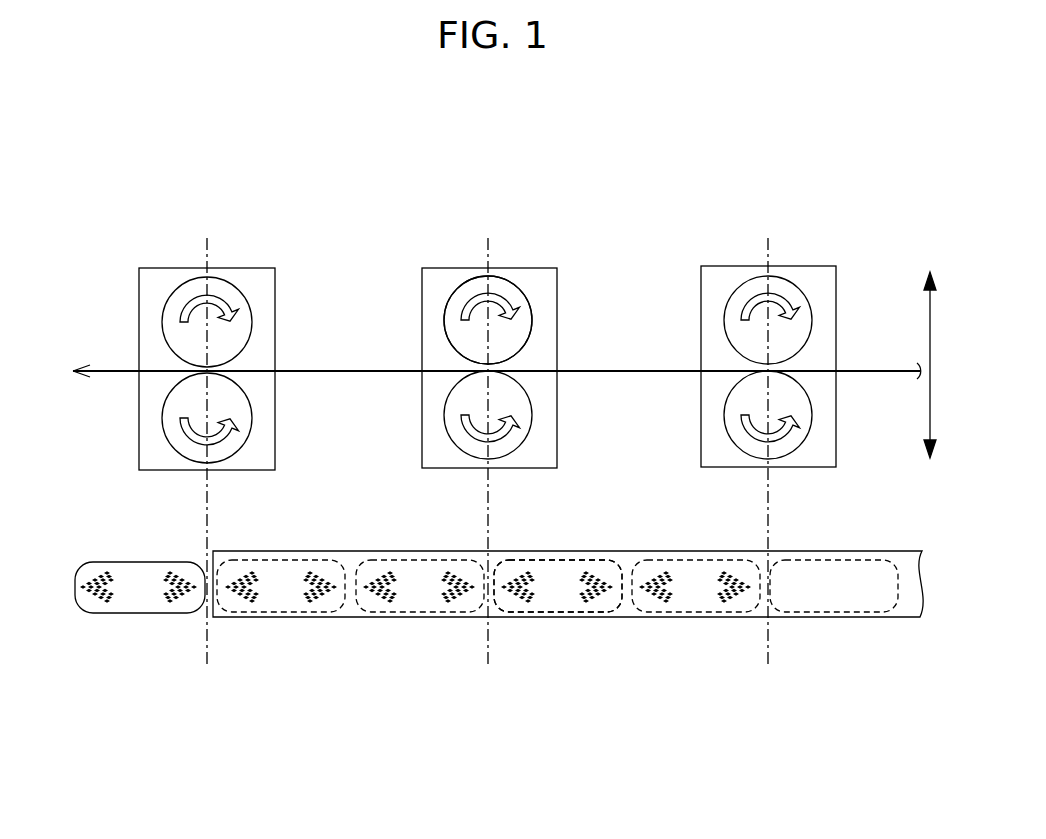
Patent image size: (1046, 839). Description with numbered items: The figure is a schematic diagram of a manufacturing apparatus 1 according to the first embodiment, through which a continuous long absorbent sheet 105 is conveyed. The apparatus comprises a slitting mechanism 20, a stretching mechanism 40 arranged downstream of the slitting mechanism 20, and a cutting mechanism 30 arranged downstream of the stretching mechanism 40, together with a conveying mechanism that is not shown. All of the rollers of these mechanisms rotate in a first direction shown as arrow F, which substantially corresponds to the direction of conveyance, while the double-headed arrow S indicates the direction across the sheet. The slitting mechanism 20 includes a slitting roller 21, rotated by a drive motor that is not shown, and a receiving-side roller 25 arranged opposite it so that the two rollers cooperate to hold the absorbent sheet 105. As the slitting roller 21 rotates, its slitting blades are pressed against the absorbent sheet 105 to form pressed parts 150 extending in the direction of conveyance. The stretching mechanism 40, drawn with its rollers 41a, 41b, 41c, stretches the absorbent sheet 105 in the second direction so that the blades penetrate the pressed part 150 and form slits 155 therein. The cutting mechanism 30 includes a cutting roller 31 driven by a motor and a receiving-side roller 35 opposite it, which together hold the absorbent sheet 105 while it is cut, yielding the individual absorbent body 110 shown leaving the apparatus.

The manufacturing apparatus 1 is at (126, 205).
The slitting mechanism 20 is at (855, 268).
The slitting roller 21 is at (814, 322).
The receiving-side roller 25 is at (814, 428).
The cutting mechanism 30 is at (292, 268).
The cutting roller 31 is at (252, 322).
The receiving-side roller 35 is at (252, 428).
The stretching mechanism 40 is at (574, 268).
The roller 41a is at (532, 428).
The roller 41b is at (532, 322).
The roller 41c is at (488, 320).
The absorbent sheet 105 is at (368, 368).
The absorbent body 110 is at (105, 614).
The pressed part 150 is at (596, 600).
The slit 155 is at (176, 602).
The first direction F is at (80, 356).
The width direction S is at (930, 351).